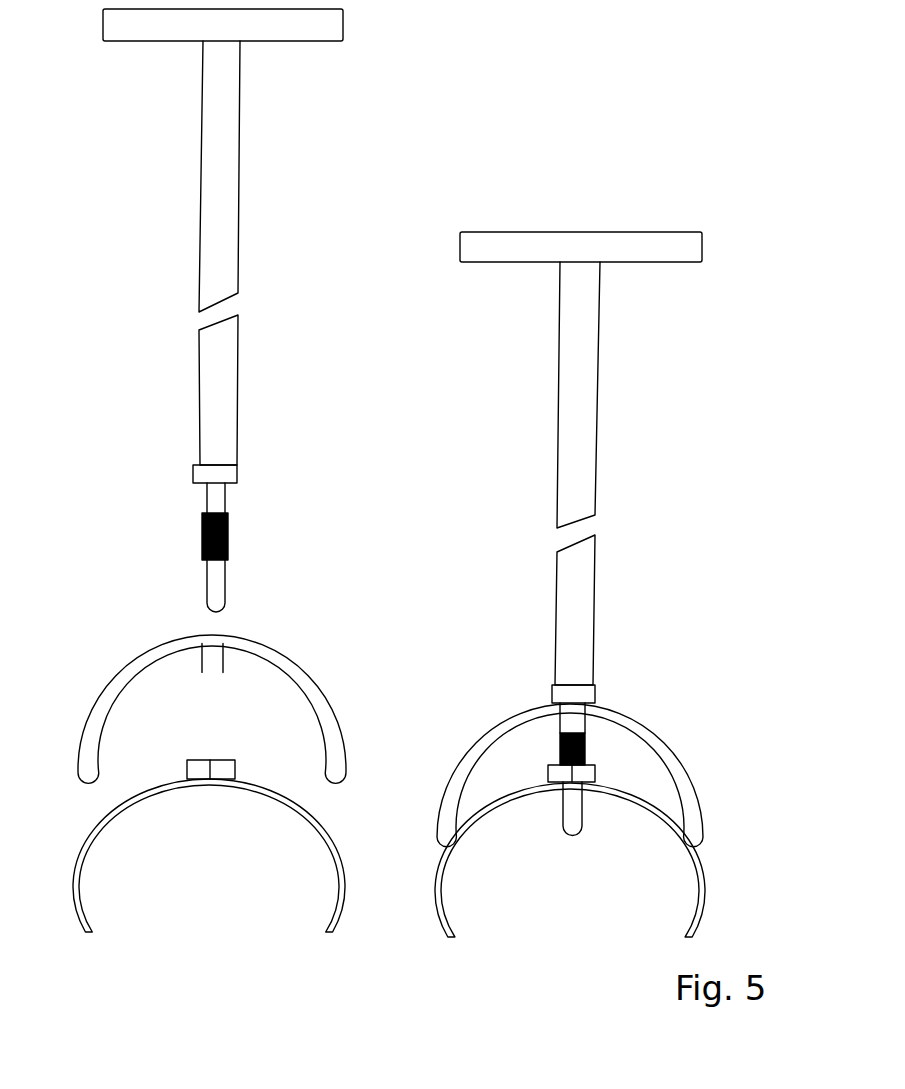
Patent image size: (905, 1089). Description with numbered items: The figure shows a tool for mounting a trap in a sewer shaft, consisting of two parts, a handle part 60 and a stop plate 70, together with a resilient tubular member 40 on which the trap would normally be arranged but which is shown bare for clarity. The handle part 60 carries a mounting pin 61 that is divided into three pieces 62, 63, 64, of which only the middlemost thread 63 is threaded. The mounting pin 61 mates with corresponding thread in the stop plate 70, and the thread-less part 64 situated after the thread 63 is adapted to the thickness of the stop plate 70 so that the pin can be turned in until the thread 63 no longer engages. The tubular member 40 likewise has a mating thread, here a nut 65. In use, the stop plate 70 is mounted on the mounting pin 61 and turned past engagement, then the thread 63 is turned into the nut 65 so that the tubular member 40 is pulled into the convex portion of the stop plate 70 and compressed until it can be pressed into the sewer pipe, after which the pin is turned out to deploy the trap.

The resilient tubular member 40 is at (310, 812).
The handle part 60 is at (245, 130).
The mounting pin 61 is at (218, 519).
The mounting pin piece 62 is at (213, 578).
The thread 63 is at (228, 527).
The thread-less part of the mounting pin 64 is at (237, 485).
The nut 65 is at (187, 761).
The stop plate 70 is at (273, 648).